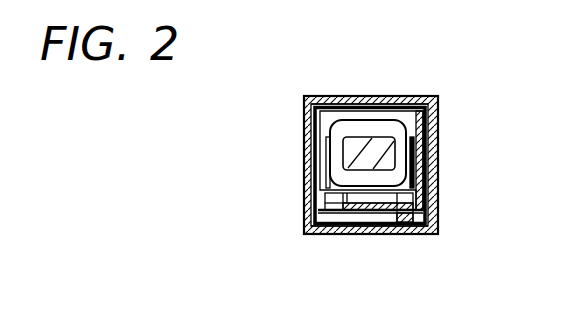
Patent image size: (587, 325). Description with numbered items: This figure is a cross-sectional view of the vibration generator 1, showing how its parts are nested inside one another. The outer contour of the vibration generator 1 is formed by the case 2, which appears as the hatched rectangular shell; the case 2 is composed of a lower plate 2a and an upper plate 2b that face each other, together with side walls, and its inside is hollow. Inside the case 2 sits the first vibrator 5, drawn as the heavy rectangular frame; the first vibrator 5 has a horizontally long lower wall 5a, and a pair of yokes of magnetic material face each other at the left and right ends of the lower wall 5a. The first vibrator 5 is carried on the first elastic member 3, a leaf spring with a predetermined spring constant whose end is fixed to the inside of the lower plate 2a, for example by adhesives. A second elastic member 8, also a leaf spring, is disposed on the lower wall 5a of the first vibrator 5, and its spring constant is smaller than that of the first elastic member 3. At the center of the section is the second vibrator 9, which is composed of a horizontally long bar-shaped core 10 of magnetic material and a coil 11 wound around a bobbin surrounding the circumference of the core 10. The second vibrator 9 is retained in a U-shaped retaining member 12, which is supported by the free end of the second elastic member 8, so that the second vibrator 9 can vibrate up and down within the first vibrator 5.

The vibration generator 1 is at (281, 92).
The case 2 is at (451, 221).
The lower plate 2a is at (421, 235).
The upper plate 2b is at (422, 98).
The first elastic member 3 is at (370, 214).
The first vibrator 5 is at (439, 131).
The lower wall 5a is at (412, 225).
The second elastic member 8 is at (352, 200).
The second vibrator 9 is at (400, 43).
The core 10 is at (381, 143).
The coil 11 is at (350, 127).
The retaining member 12 is at (421, 163).